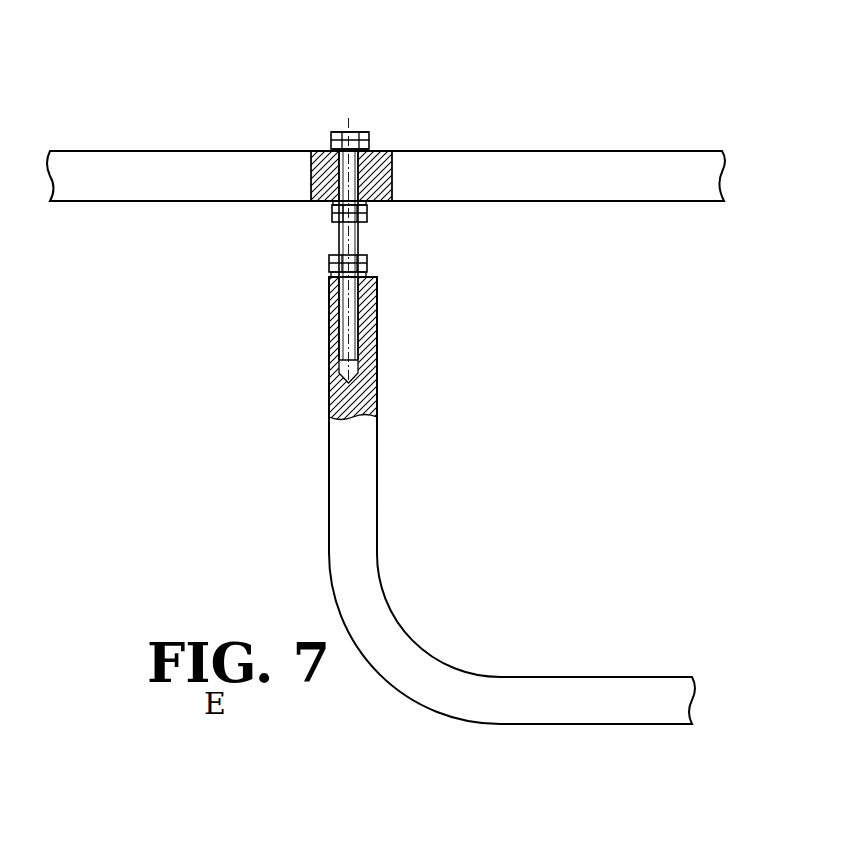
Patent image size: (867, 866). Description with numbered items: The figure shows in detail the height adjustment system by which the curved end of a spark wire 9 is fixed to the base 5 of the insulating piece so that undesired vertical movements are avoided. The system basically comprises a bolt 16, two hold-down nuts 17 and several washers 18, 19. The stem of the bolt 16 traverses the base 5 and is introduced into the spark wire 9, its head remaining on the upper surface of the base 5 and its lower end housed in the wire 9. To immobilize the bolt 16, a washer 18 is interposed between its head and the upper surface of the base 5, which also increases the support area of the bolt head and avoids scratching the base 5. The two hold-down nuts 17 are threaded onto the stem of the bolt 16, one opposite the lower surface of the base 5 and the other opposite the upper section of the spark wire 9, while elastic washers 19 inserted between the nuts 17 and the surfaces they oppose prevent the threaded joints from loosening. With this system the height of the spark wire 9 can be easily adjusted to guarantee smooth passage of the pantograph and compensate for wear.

The base of the insulating piece 5 is at (651, 168).
The spark wire 9 is at (362, 491).
The bolt 16 is at (331, 136).
The hold-down nuts 17 is at (367, 264).
The washer 18 is at (366, 136).
The elastic washers 19 is at (329, 263).